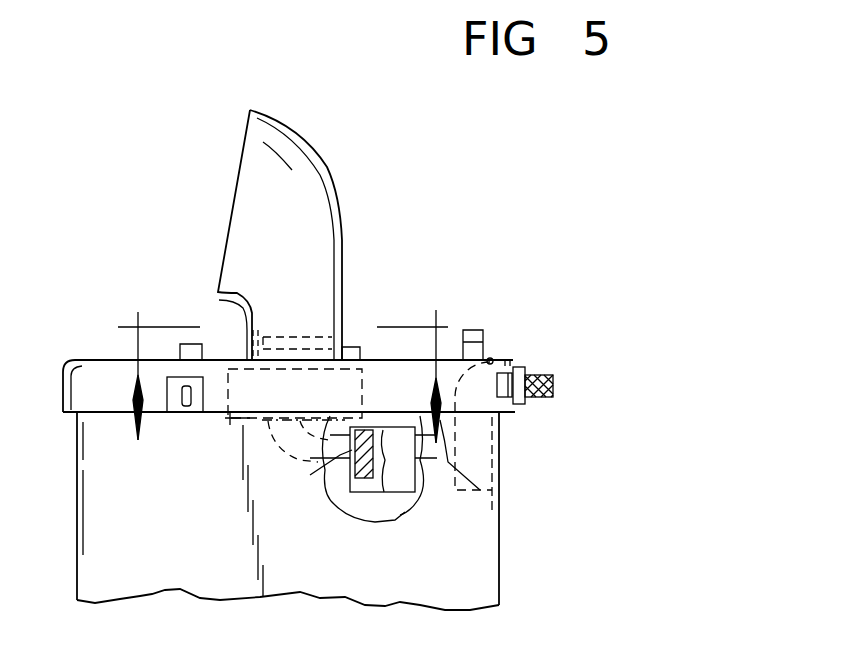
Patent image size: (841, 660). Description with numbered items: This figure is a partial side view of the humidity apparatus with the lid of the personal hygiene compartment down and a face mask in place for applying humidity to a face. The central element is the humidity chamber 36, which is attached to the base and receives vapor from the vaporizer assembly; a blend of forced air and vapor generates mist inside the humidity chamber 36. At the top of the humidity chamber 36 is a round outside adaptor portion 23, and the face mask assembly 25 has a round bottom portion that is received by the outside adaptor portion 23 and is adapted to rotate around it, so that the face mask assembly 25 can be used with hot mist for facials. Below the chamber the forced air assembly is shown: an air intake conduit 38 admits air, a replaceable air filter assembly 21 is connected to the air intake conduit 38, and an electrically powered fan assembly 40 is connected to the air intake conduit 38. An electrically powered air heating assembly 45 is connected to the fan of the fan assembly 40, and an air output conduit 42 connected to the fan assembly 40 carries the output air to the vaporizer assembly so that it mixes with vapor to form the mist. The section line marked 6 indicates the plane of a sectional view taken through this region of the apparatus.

The face mask assembly 25 is at (290, 175).
The outside adaptor portion 23 is at (312, 350).
The humidity chamber 36 is at (362, 393).
The section line 6- 6 is at (287, 357).
The replaceable air filter assembly 21 is at (547, 376).
The air intake conduit 38 is at (478, 440).
The air output conduit 42 is at (322, 460).
The fan assembly 40 is at (390, 478).
The air heating assembly 45 is at (368, 480).